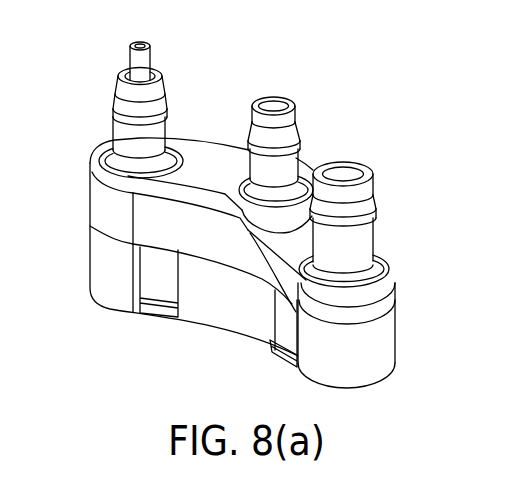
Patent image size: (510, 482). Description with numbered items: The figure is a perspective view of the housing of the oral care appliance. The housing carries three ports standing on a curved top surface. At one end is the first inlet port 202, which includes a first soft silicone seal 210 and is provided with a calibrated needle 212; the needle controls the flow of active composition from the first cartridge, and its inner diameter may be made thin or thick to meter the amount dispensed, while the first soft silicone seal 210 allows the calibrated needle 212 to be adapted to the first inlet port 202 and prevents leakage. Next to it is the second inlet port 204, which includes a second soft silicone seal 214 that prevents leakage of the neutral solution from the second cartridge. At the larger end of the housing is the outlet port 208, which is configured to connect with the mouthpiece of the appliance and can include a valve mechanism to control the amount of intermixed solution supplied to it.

The first inlet port 202 is at (128, 138).
The second inlet port 204 is at (290, 167).
The outlet port 208 is at (360, 236).
The first soft silicone seal 210 is at (158, 87).
The calibrated needle 212 is at (142, 63).
The second soft silicone seal 214 is at (285, 122).